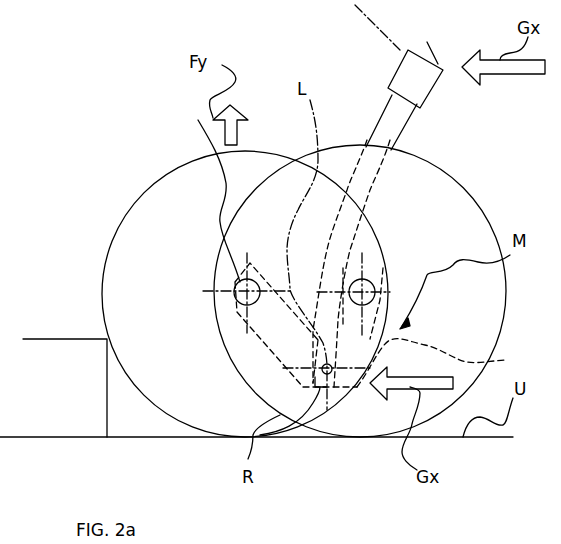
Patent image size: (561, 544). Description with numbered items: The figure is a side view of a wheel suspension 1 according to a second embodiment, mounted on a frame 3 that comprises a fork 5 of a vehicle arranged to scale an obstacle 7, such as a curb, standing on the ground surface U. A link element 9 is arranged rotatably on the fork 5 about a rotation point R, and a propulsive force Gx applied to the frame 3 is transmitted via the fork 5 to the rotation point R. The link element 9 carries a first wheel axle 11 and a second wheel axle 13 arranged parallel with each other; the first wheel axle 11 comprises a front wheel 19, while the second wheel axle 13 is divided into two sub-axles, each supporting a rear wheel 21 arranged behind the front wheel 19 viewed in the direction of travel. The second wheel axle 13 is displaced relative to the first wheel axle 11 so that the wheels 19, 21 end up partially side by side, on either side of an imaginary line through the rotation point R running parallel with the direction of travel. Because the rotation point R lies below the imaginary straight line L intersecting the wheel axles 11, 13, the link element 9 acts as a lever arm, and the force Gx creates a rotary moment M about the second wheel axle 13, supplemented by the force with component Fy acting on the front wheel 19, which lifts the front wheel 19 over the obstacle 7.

The wheel suspension 1 is at (52, 110).
The frame 3 is at (368, 33).
The fork 5 is at (380, 115).
The obstacle 7 is at (60, 337).
The link element 9 is at (507, 360).
The first wheel axle 11 is at (233, 217).
The second wheel axle 13 is at (363, 279).
The front wheel 19 is at (163, 173).
The rear wheel 21 is at (455, 181).